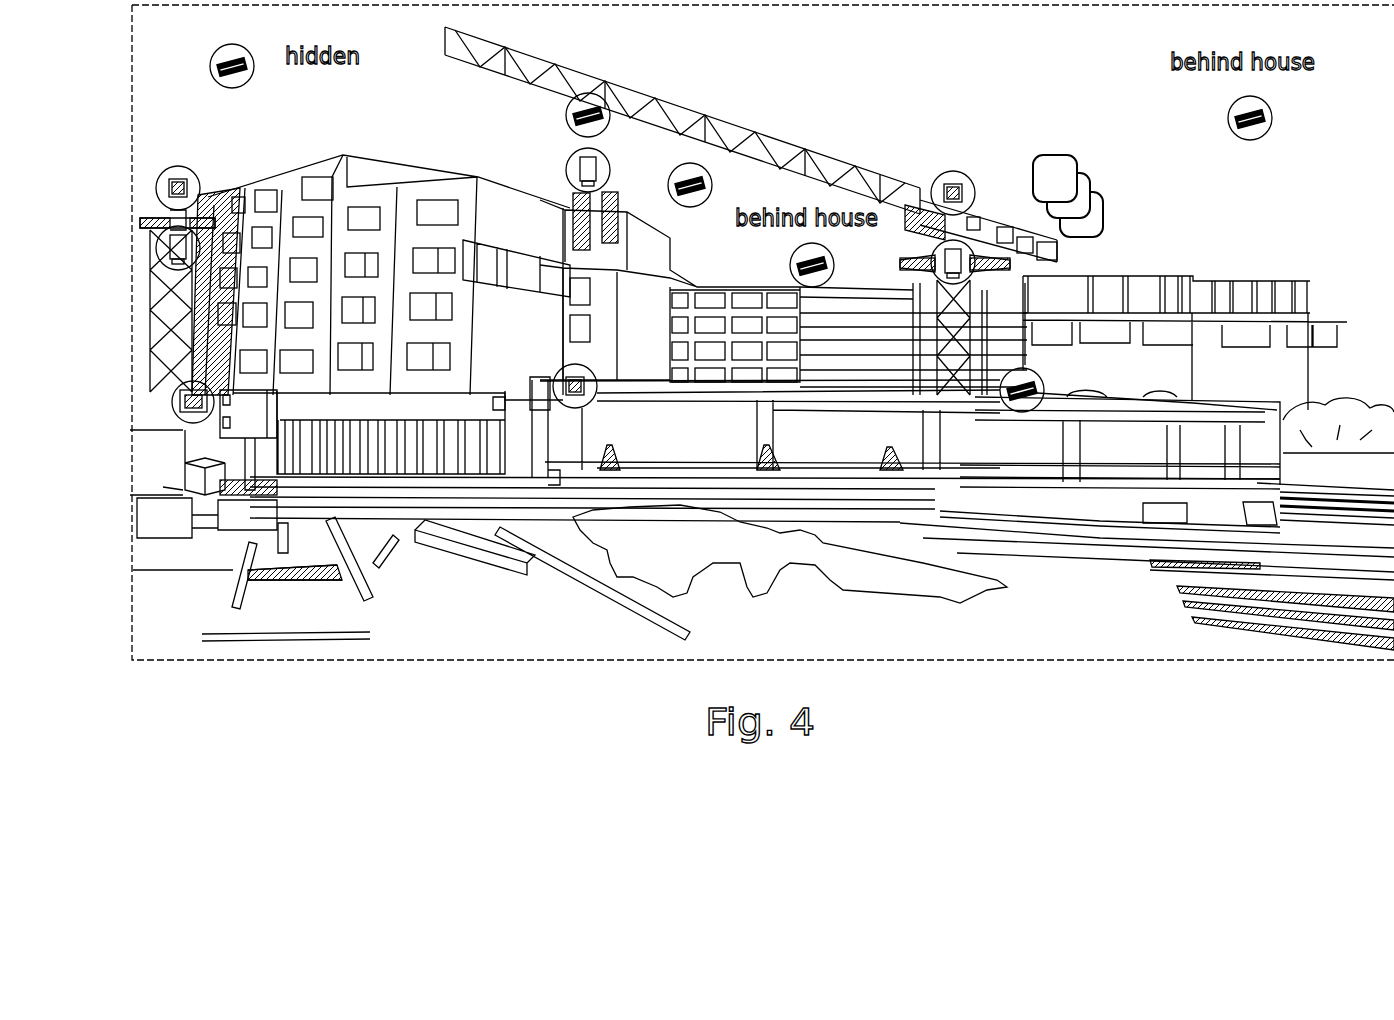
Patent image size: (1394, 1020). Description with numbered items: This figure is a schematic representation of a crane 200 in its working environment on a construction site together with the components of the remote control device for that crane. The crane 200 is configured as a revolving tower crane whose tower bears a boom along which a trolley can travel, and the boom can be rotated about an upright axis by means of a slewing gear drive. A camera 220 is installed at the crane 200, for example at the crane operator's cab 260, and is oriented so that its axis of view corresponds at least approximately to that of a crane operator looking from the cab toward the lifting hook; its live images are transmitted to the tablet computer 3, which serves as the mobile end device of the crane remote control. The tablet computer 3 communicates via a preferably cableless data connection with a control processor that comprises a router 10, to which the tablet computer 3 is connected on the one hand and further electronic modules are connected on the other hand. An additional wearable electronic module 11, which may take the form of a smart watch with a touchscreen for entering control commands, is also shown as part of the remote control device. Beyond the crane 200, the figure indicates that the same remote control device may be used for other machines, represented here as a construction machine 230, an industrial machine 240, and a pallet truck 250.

The tablet computer 3 is at (167, 403).
The router 10 is at (188, 165).
The electronic module 11 is at (257, 73).
The crane 200 is at (787, 153).
The camera 220 is at (168, 250).
The construction machine 230 is at (1052, 157).
The industrial machine 240 is at (1093, 175).
The pallet truck 250 is at (1103, 223).
The crane operator's cab 260 is at (928, 207).